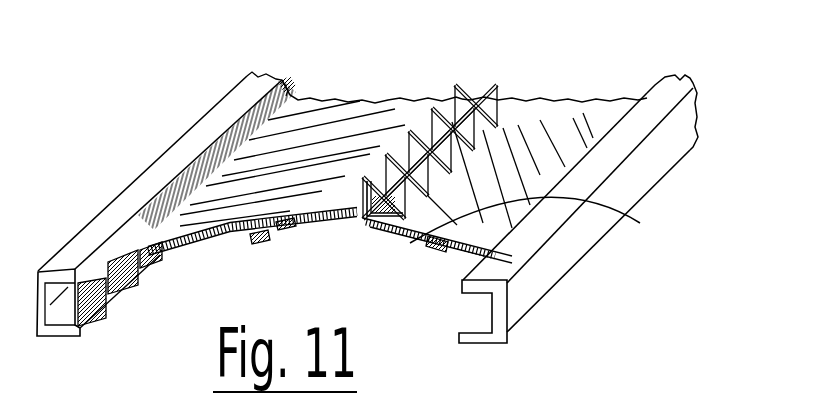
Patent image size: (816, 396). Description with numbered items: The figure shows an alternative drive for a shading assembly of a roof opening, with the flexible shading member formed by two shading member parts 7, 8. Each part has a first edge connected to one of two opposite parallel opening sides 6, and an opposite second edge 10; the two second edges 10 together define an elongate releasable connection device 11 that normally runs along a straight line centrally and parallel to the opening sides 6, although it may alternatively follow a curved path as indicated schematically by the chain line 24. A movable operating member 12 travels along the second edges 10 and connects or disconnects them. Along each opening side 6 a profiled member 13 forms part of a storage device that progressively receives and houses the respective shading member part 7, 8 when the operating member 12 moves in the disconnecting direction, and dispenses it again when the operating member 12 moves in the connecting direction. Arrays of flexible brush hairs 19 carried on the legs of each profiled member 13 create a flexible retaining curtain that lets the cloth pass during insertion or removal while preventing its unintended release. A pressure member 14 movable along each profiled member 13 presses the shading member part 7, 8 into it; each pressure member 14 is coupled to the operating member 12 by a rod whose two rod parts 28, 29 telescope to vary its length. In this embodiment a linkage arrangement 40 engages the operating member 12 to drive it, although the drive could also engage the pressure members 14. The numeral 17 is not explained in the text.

The opening side 6 is at (215, 117).
The shading member part 7 is at (368, 108).
The shading member part 8 is at (563, 117).
The second edge 10 is at (230, 228).
The elongate releasable connection device 11 is at (423, 117).
The operating member 12 is at (368, 237).
The profiled member 13 is at (148, 183).
The pressure member 14 is at (118, 294).
The fastening clamp 17 is at (259, 243).
The flexible brush hairs 19 is at (283, 86).
The chain line 24 is at (513, 97).
The rod part 28 is at (284, 231).
The rod part 29 is at (185, 250).
The linkage arrangement 40 is at (480, 110).